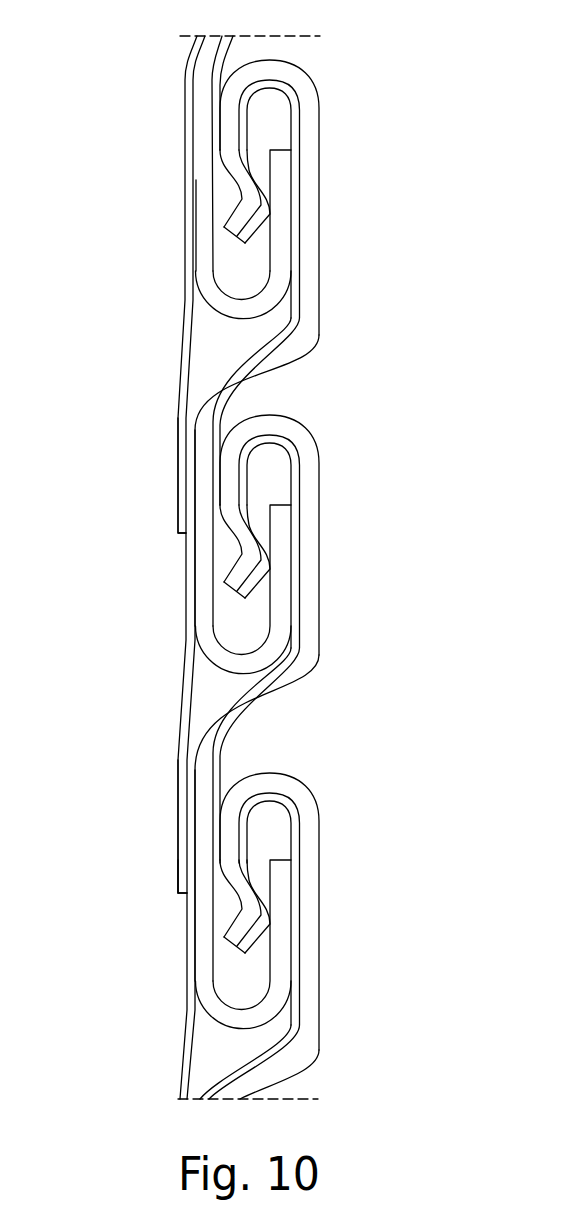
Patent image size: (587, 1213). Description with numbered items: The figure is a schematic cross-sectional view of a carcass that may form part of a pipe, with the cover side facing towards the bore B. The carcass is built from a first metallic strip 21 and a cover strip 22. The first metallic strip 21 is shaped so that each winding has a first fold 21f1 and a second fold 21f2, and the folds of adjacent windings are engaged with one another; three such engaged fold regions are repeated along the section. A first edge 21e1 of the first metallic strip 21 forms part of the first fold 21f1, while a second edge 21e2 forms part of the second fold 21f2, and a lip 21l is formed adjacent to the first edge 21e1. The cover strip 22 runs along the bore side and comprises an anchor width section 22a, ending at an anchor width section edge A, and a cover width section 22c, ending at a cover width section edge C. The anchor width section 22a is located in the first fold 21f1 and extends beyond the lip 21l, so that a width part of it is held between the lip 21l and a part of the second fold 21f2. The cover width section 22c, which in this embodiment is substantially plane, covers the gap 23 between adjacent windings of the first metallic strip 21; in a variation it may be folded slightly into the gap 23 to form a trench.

The first metallic strip 21 is at (314, 928).
The first edge 21e1 is at (225, 586).
The second edge 21e2 is at (272, 507).
The first fold 21f1 is at (308, 520).
The second fold 21f2 is at (207, 562).
The lip 21l is at (257, 556).
The cover strip 22 is at (188, 90).
The anchor width section 22a is at (300, 113).
The cover width section 22c is at (180, 818).
The gap 23 is at (237, 268).
The anchor width section edge A is at (245, 244).
The bore B is at (129, 475).
The cover width section edge C is at (183, 896).